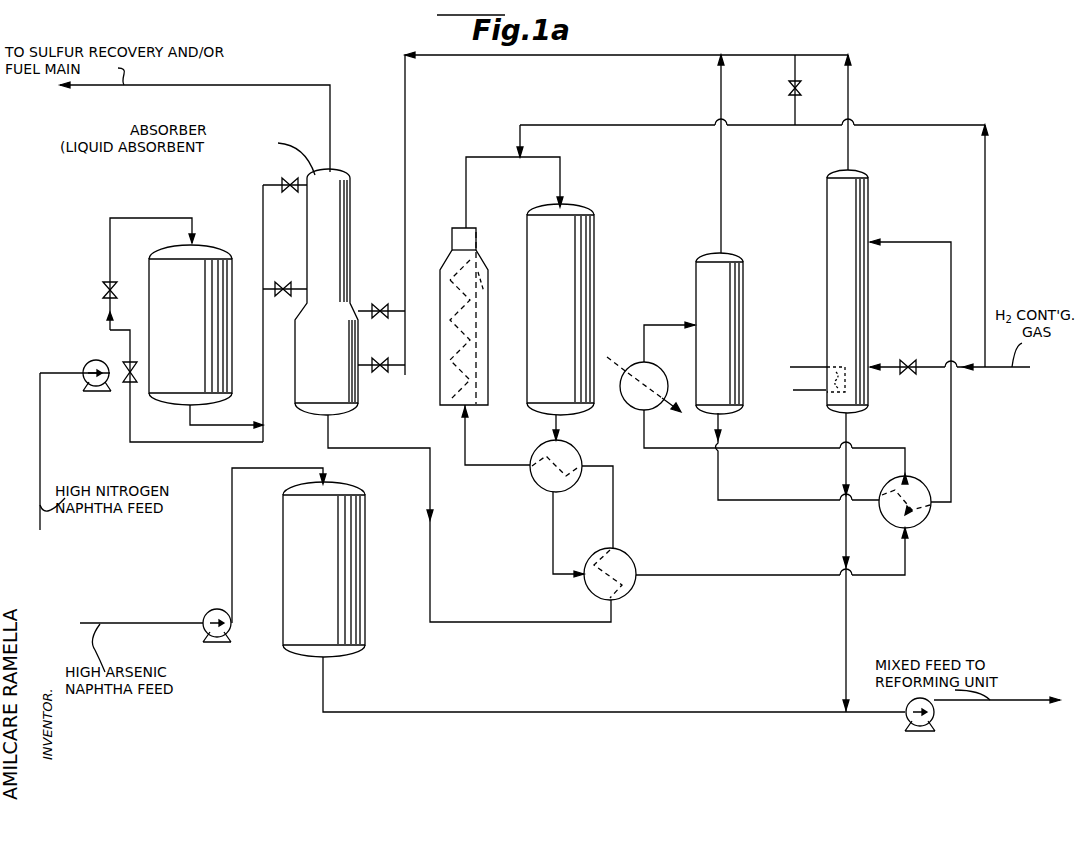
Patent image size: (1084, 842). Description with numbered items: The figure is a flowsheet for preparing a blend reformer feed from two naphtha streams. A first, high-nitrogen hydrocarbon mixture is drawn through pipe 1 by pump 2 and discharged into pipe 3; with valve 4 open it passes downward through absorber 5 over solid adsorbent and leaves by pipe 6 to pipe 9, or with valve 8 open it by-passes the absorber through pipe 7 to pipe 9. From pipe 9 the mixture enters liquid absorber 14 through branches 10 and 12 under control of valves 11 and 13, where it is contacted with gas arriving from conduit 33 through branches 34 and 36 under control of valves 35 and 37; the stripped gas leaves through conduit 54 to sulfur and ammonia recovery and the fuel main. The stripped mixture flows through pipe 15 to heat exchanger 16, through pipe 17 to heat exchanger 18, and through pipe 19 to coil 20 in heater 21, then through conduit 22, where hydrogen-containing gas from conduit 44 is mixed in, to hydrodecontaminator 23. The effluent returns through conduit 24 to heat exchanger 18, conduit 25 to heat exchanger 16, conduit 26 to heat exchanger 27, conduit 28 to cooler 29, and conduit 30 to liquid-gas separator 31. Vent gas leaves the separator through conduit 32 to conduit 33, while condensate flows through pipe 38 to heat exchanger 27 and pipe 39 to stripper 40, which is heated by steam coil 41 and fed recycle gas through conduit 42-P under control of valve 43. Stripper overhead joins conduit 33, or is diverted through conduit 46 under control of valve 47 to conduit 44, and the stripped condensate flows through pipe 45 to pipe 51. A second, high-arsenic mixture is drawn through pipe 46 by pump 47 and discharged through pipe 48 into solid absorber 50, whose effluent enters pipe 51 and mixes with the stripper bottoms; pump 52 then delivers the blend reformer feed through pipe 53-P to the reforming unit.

The pipe 1 is at (38, 398).
The pump 2 is at (82, 352).
The pipe 3 is at (164, 218).
The valve 4 is at (100, 287).
The absorber 5 is at (234, 280).
The pipe 6 is at (212, 428).
The pipe 7 is at (180, 442).
The valve 8 is at (125, 385).
The pipe 9 is at (263, 358).
The branch 10 is at (293, 192).
The valve 11 is at (283, 185).
The branch 12 is at (295, 288).
The valve 13 is at (283, 297).
The liquid absorber 14 is at (352, 222).
The pipe 15 is at (406, 448).
The heat exchanger 16 is at (626, 555).
The pipe 17 is at (624, 492).
The heat exchanger 18 is at (540, 485).
The pipe 19 is at (467, 438).
The coil 20 is at (490, 353).
The heater 21 is at (489, 290).
The conduit 22 is at (466, 198).
The hydrodecontaminator 23 is at (596, 250).
The conduit 24 is at (560, 428).
The conduit 25 is at (552, 548).
The conduit 26 is at (700, 580).
The heat exchanger 27 is at (925, 482).
The conduit 28 is at (792, 450).
The cooler 29 is at (645, 364).
The conduit 30 is at (680, 320).
The liquid-gas separator 31 is at (745, 305).
The conduit 32 is at (722, 160).
The conduit 33 is at (670, 55).
The branch 34 is at (392, 312).
The valve 35 is at (380, 303).
The branch 36 is at (396, 366).
The valve 37 is at (380, 358).
The pipe 38 is at (752, 500).
The pipe 39 is at (956, 420).
The stripper 40 is at (826, 222).
The steam coil 41 is at (809, 365).
The conduit 42-P is at (1000, 370).
The valve 43 is at (923, 354).
The conduit 44 is at (916, 122).
The pipe 45 is at (843, 555).
The conduit / pipe 46 is at (792, 108).
The valve / pump 47 is at (803, 86).
The pipe 48 is at (231, 538).
The solid absorber 50 is at (367, 562).
The pipe 51 is at (572, 713).
The pump 52 is at (910, 720).
The pipe 53-P is at (958, 702).
The conduit 54 is at (163, 87).